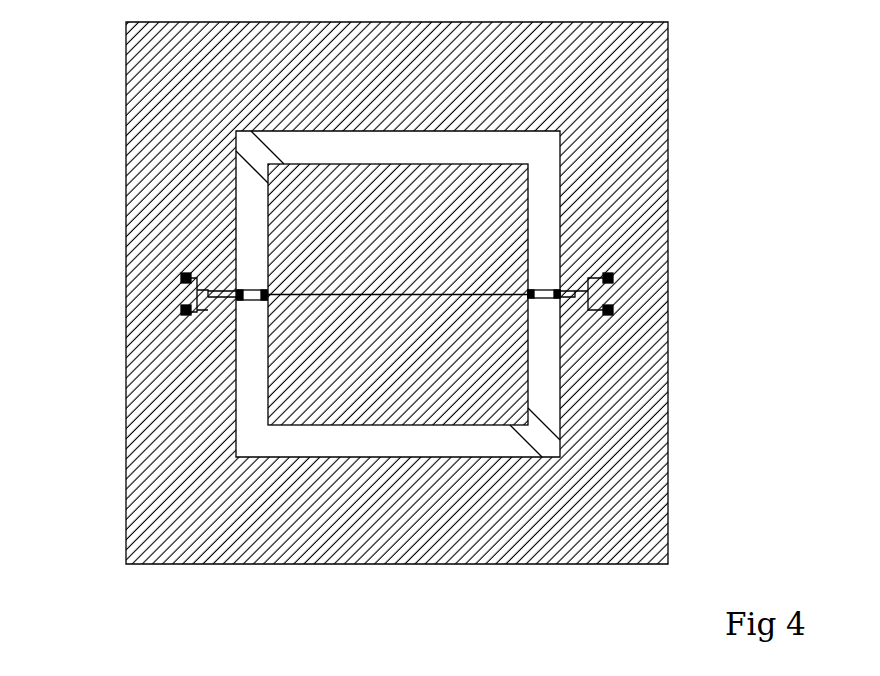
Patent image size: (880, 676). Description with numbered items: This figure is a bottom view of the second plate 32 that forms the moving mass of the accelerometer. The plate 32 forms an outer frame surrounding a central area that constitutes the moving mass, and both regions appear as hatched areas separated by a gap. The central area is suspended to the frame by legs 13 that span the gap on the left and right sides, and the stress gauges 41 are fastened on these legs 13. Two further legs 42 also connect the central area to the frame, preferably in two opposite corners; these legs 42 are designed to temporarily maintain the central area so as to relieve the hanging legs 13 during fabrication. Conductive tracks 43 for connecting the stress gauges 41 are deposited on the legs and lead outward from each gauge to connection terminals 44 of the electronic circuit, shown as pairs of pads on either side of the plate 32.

The second plate 32 is at (461, 293).
The legs 42 is at (262, 148).
The stress gauges 41 is at (262, 302).
The legs 13 is at (248, 290).
The conductive tracks 43 is at (197, 263).
The connection terminals 44 is at (183, 309).